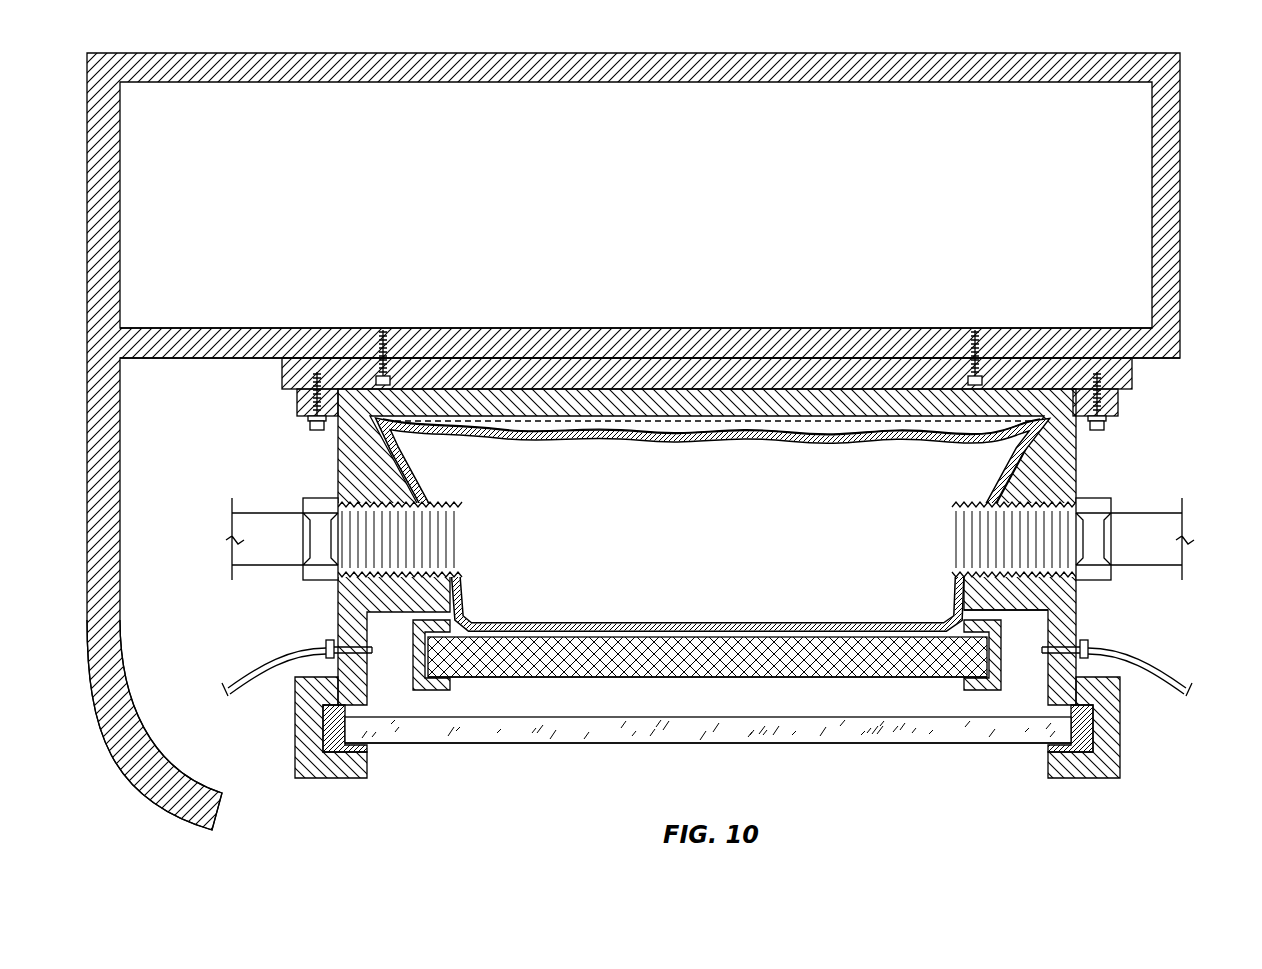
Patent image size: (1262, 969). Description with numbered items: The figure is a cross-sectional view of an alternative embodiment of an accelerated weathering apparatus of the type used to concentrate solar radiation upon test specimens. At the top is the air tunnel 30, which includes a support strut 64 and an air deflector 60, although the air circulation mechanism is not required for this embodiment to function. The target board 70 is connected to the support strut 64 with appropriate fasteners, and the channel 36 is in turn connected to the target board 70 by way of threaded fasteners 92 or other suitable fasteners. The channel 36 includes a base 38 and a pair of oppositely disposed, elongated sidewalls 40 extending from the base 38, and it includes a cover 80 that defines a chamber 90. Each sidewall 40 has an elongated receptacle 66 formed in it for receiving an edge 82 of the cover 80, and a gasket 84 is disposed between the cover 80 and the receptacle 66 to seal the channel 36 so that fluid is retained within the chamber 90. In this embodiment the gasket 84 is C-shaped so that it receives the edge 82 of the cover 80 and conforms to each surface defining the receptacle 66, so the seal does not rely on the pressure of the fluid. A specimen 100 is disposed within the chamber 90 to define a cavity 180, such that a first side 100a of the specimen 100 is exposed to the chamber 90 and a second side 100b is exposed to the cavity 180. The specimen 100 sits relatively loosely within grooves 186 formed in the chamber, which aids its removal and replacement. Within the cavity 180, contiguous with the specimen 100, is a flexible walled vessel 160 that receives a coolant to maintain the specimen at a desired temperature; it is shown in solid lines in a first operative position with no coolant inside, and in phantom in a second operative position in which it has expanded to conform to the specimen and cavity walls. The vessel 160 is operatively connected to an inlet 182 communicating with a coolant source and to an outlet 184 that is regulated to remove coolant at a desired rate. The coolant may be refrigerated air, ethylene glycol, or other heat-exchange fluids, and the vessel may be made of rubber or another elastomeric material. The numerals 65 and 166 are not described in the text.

The air tunnel 30 is at (1182, 142).
The air deflector 60 is at (122, 460).
The support strut 64 is at (1083, 340).
The target board 70 is at (1132, 375).
The base 38 is at (297, 402).
The sidewall 40 is at (338, 612).
The cavity 180 is at (440, 430).
The flexible walled vessel 160 is at (745, 430).
The outlet 184 is at (322, 505).
The inlet 182 is at (1105, 505).
The screw 65 is at (383, 340).
The threaded fasteners 92 is at (315, 430).
The specimen 100 is at (932, 677).
The first side 100a is at (690, 677).
The second side 100b is at (975, 610).
The grooves 186 is at (453, 678).
The electrical lead 166 is at (1050, 715).
The gasket 84 is at (323, 740).
The edge 82 is at (338, 735).
The receptacle 66 is at (360, 717).
The cover 80 is at (995, 743).
The chamber 90 is at (790, 690).
The channel 36 is at (1098, 803).